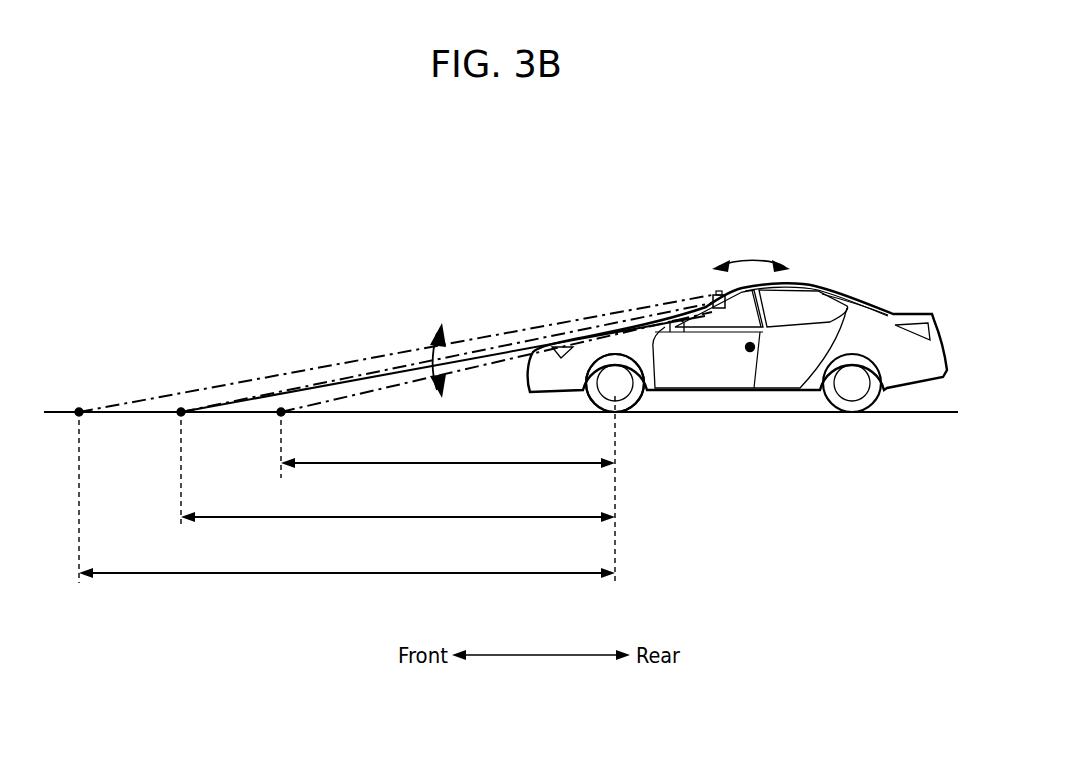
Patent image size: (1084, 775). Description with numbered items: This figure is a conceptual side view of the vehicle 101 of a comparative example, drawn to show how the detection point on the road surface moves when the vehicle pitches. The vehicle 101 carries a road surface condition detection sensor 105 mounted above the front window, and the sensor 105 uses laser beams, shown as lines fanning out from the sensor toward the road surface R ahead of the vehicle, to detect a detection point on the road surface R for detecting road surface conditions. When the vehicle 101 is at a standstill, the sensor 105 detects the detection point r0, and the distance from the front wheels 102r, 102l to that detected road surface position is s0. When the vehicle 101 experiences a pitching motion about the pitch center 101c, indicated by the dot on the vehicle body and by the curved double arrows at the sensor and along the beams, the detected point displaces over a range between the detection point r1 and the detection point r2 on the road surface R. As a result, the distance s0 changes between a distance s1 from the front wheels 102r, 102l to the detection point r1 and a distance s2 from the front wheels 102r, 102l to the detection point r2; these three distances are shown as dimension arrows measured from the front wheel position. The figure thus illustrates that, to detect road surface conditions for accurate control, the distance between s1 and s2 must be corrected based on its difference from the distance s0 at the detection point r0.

The vehicle 101 is at (836, 272).
The road surface condition detection sensor 105 is at (712, 294).
The pitch center 101c is at (750, 347).
The front wheel 102l is at (619, 393).
The front wheel 102r is at (619, 393).
The road surface R is at (925, 412).
The detection point r1 is at (393, 439).
The detection point r0 is at (444, 415).
The detection point r2 is at (494, 395).
The distance s0 is at (398, 506).
The distance s1 is at (347, 562).
The distance s2 is at (448, 452).